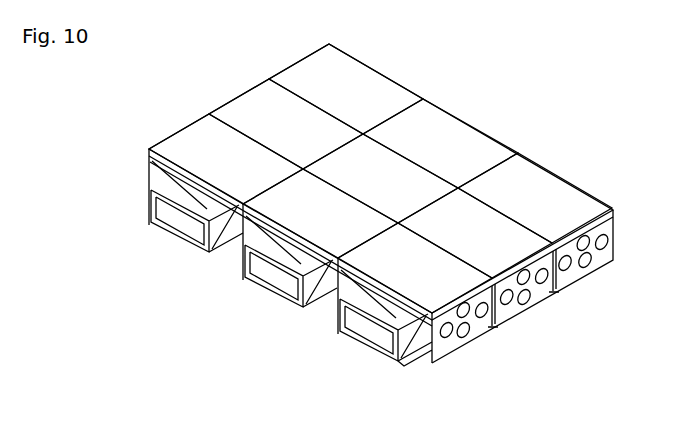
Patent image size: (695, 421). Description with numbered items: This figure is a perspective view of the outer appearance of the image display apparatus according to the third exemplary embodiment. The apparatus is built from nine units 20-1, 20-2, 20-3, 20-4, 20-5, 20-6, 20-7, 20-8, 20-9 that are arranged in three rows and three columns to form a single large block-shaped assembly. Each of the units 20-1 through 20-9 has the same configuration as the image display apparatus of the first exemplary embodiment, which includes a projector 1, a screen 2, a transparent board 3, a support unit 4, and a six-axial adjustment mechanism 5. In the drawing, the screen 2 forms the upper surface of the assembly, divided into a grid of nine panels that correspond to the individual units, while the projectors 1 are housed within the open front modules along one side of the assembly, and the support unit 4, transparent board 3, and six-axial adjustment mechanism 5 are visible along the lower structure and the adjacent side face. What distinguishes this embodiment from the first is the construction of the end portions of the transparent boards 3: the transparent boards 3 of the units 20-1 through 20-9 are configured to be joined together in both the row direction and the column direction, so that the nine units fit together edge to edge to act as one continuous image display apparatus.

The projector 1 is at (362, 307).
The screen 2 is at (409, 274).
The transparent board 3 is at (493, 330).
The support unit 4 is at (458, 342).
The six-axial adjustment mechanism 5 is at (406, 364).
The unit 20-1 is at (143, 156).
The unit 20-2 is at (255, 298).
The unit 20-3 is at (396, 315).
The unit 20-4 is at (505, 288).
The unit 20-5 is at (419, 180).
The unit 20-6 is at (230, 90).
The unit 20-7 is at (292, 56).
The unit 20-8 is at (466, 107).
The unit 20-9 is at (579, 174).